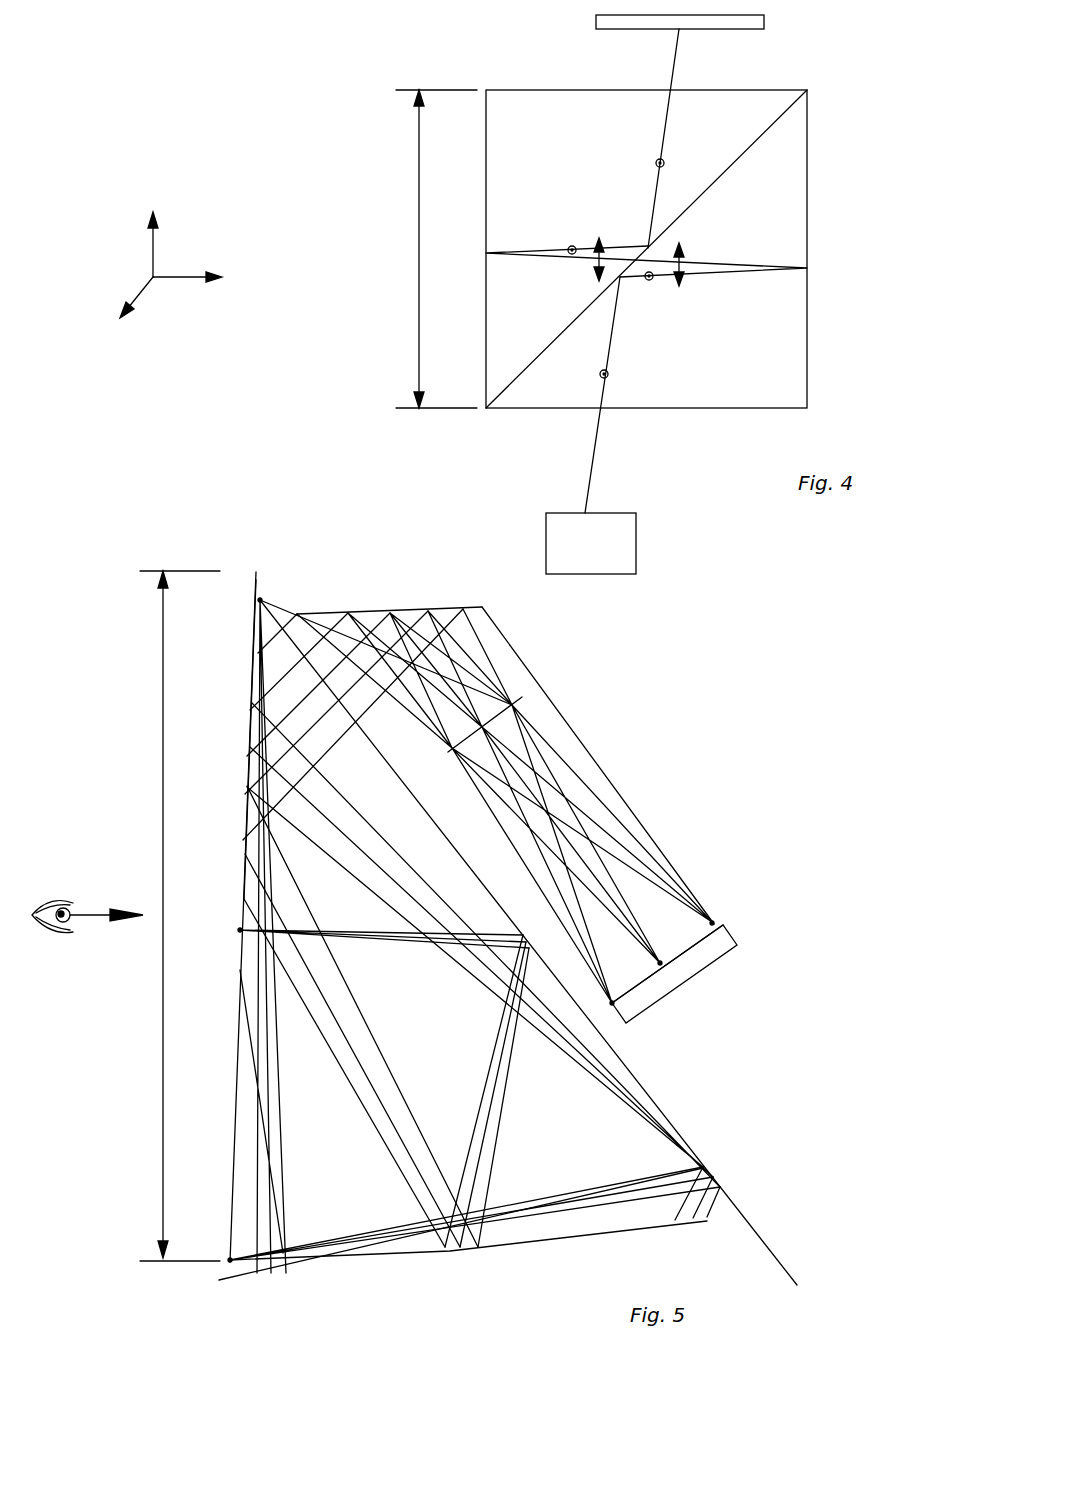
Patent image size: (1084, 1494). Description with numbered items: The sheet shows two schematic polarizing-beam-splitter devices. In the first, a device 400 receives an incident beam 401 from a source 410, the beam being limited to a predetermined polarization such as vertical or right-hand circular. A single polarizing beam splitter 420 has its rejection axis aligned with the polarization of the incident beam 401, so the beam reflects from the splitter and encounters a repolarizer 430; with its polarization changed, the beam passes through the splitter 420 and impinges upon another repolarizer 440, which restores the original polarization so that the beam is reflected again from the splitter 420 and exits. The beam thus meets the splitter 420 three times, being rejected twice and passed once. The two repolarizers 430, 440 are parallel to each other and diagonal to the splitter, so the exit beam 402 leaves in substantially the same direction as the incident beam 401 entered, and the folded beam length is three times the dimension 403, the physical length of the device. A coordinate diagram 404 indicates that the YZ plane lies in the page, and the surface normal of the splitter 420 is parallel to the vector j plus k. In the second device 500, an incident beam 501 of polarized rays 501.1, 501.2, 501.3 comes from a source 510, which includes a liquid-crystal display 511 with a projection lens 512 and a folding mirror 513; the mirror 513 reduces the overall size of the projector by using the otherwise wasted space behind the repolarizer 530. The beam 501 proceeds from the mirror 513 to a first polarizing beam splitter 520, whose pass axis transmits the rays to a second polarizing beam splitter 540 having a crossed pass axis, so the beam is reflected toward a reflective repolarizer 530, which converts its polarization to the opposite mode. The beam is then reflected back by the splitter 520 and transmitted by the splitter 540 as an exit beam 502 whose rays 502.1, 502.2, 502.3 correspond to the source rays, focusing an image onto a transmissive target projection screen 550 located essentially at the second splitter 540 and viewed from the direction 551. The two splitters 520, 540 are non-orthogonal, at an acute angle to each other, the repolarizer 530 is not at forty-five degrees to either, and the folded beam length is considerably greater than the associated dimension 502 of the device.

In FIG. 4, the device 400 is at (440, 57).
In FIG. 4, the incident beam 401 is at (594, 460).
In FIG. 4, the exit beam 402 is at (676, 48).
In FIG. 4, the dimension 403 is at (419, 210).
In FIG. 4, the diagram 404 is at (212, 210).
In FIG. 4, the source 410 is at (636, 545).
In FIG. 4, the polarizing beam splitter 420 is at (572, 324).
In FIG. 4, the repolarizer 430 is at (807, 190).
In FIG. 4, the repolarizer 440 is at (486, 133).
In FIG. 5, the device 500 is at (698, 692).
In FIG. 5, the incident beam 501 is at (716, 896).
In FIG. 5, the ray 501.1 is at (610, 1007).
In FIG. 5, the ray 501.2 is at (657, 968).
In FIG. 5, the ray 501.3 is at (708, 932).
In FIG. 5, the exit beam 502 is at (163, 760).
In FIG. 5, the ray 502.1 is at (226, 1258).
In FIG. 5, the ray 502.2 is at (240, 925).
In FIG. 5, the ray 502.3 is at (255, 598).
In FIG. 5, the source 510 is at (665, 855).
In FIG. 5, the liquid-crystal display 511 is at (724, 930).
In FIG. 5, the projection lens 512 is at (490, 725).
In FIG. 5, the folding mirror 513 is at (480, 603).
In FIG. 5, the first polarizing beam splitter 520 is at (750, 1225).
In FIG. 5, the reflective repolarizer 530 is at (517, 1240).
In FIG. 5, the second polarizing beam splitter 540 is at (258, 578).
In FIG. 5, the transmissive target projection screen 550 is at (251, 622).
In FIG. 5, the viewing direction 551 is at (127, 920).